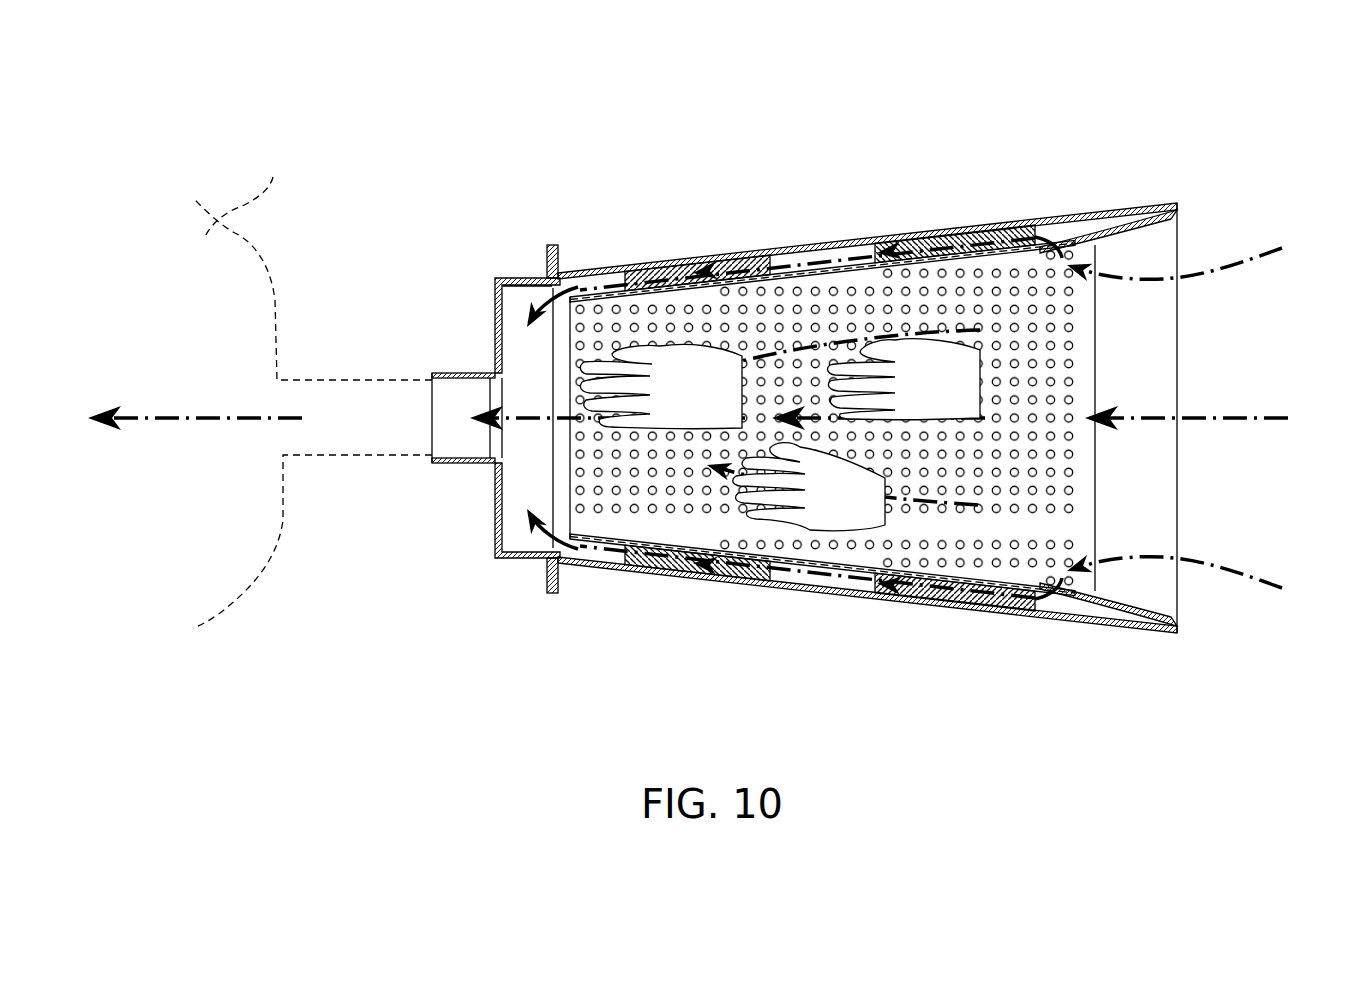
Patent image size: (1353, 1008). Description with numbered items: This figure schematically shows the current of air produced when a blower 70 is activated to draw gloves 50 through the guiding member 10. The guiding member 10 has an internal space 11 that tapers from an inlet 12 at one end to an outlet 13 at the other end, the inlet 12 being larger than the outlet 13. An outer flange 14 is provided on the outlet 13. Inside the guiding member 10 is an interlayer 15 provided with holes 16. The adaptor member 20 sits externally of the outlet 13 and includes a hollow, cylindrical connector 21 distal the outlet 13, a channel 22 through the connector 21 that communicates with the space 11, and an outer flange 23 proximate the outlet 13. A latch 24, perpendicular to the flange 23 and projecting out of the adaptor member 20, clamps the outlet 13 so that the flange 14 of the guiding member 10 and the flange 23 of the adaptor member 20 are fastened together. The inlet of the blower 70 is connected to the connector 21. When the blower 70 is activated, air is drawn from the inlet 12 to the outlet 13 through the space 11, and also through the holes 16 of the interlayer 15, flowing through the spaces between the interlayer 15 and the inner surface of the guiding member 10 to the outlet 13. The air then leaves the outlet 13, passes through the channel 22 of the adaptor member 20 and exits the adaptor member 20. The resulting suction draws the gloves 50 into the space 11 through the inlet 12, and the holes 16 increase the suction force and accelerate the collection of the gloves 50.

The guiding member 10 is at (790, 246).
The internal space 11 is at (1015, 421).
The inlet 12 is at (1150, 365).
The outlet 13 is at (555, 355).
The outer flange 14 is at (566, 292).
The interlayer 15 is at (690, 262).
The holes 16 is at (943, 272).
The adaptor member 20 is at (494, 300).
The connector 21 is at (460, 373).
The channel 22 is at (445, 433).
The outer flange 23 is at (549, 247).
The latch 24 is at (518, 286).
The gloves 50 is at (830, 510).
The blower 70 is at (312, 383).